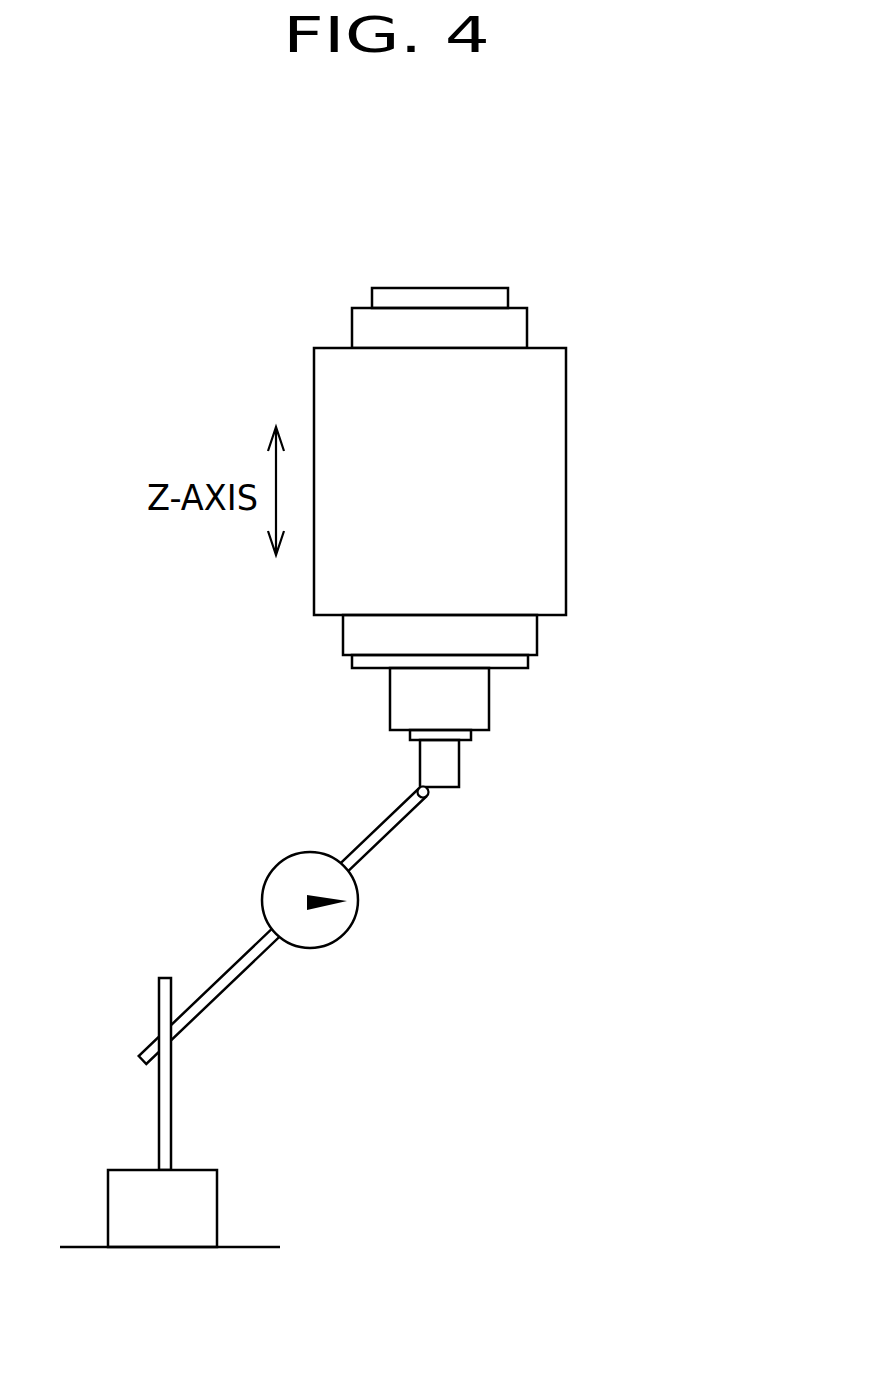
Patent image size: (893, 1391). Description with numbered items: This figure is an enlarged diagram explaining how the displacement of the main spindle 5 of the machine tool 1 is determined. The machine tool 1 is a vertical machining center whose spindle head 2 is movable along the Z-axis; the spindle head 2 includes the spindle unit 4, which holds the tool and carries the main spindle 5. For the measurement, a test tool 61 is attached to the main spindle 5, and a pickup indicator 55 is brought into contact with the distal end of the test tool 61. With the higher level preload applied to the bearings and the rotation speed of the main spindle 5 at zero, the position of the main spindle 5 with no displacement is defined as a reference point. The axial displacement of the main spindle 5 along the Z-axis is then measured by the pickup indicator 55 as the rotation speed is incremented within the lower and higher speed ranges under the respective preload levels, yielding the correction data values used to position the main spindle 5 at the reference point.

The machine tool 1 is at (585, 163).
The spindle head 2 is at (294, 359).
The spindle unit 4 is at (357, 679).
The main spindle 5 is at (470, 733).
The test tool 61 is at (460, 778).
The pickup indicator 55 is at (348, 932).